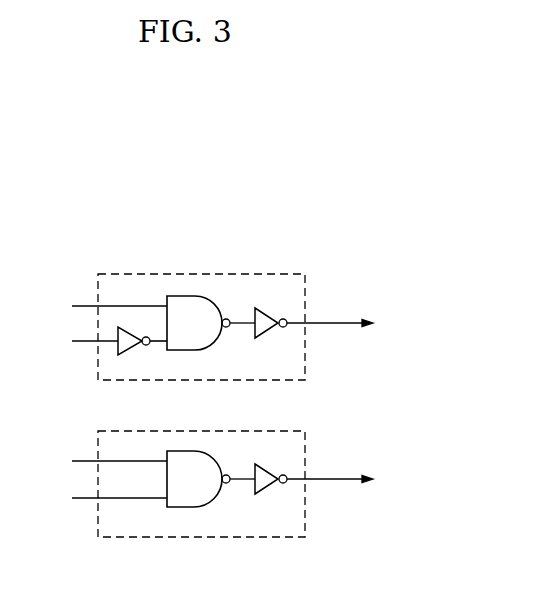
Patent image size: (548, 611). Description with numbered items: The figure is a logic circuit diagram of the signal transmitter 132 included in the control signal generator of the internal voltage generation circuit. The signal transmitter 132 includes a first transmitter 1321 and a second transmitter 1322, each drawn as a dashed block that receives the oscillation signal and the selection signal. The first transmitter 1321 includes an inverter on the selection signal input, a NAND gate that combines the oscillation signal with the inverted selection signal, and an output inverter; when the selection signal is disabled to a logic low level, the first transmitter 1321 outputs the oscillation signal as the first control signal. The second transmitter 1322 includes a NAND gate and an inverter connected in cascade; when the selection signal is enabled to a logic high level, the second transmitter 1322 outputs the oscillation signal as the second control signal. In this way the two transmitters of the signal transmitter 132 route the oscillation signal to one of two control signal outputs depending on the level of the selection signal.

The signal transmitter 132 is at (88, 217).
The first transmitter 1321 is at (285, 274).
The second transmitter 1322 is at (285, 431).